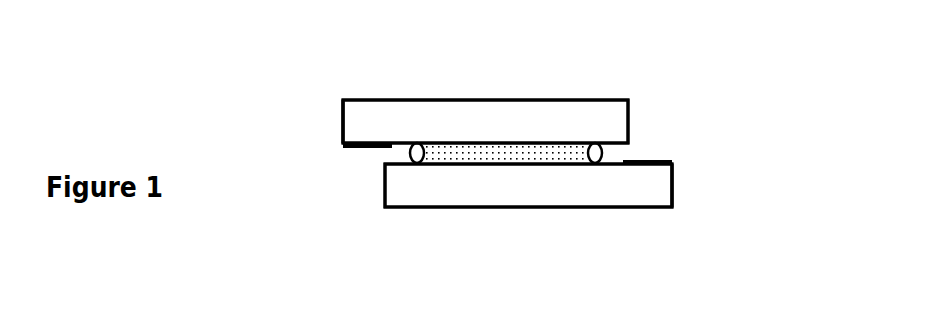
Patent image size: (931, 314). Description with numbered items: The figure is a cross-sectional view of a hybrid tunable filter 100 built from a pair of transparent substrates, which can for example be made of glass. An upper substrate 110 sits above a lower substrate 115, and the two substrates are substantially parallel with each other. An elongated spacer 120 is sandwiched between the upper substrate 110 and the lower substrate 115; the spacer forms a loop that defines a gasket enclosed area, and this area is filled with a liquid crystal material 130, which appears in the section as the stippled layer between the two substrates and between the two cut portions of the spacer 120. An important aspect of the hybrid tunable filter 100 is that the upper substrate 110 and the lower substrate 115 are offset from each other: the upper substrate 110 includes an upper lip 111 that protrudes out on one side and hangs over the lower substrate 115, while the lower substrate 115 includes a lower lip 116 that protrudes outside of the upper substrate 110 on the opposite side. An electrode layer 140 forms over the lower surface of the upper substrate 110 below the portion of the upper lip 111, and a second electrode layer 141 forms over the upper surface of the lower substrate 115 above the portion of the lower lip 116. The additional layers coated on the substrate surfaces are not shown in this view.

The hybrid tunable filter 100 is at (507, 99).
The upper substrate 110 is at (588, 119).
The upper lip 111 is at (342, 118).
The lower substrate 115 is at (623, 188).
The lower lip 116 is at (674, 188).
The elongated spacer 120 is at (605, 152).
The liquid crystal material 130 is at (518, 157).
The electrode layer 140 is at (357, 150).
The electrode layer 141 is at (673, 159).